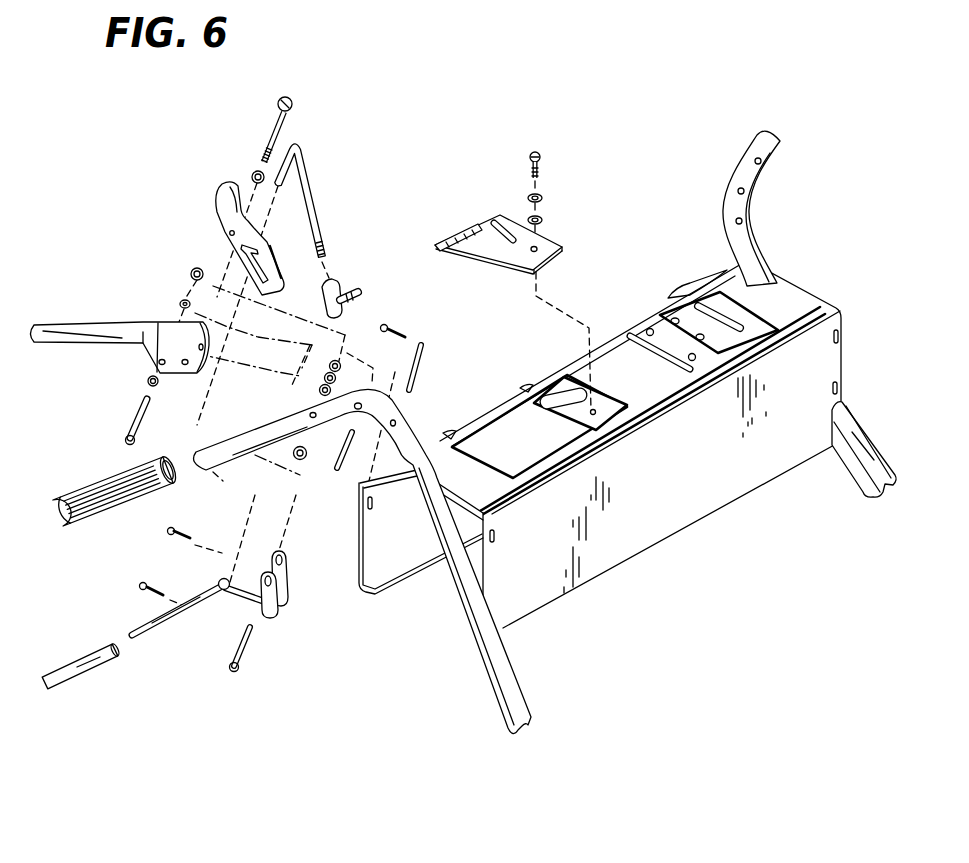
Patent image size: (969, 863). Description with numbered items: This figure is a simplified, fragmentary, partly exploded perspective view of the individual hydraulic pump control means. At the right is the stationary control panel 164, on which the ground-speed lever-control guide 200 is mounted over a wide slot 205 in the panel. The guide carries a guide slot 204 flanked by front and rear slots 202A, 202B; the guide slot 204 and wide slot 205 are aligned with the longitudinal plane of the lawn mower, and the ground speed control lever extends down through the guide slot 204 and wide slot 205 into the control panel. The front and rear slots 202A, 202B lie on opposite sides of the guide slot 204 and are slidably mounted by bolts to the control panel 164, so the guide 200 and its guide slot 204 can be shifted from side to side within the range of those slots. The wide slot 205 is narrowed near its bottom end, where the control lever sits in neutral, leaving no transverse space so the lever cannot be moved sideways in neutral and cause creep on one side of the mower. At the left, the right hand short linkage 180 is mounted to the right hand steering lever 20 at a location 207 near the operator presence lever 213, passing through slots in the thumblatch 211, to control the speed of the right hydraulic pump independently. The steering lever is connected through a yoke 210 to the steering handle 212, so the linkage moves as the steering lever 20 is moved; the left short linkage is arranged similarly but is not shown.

The right hand steering lever 20 is at (130, 655).
The stationary control panel 164 is at (816, 308).
The right hand short linkage 180 is at (311, 201).
The ground-speed lever-control guide 200 is at (492, 256).
The front slot 202A is at (546, 238).
The rear slot 202B is at (461, 230).
The guide slot 204 is at (507, 214).
The wide slot 205 is at (556, 395).
The mounting location of short linkage on steering lever 207 is at (222, 600).
The yoke 210 is at (284, 593).
The thumblatch 211 is at (227, 223).
The steering handle 212 is at (500, 676).
The operator presence lever 213 is at (100, 328).